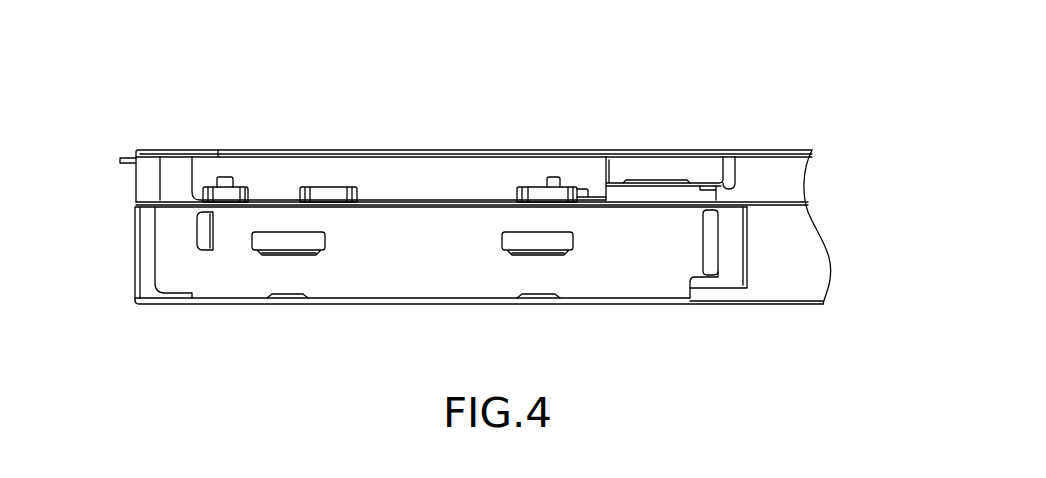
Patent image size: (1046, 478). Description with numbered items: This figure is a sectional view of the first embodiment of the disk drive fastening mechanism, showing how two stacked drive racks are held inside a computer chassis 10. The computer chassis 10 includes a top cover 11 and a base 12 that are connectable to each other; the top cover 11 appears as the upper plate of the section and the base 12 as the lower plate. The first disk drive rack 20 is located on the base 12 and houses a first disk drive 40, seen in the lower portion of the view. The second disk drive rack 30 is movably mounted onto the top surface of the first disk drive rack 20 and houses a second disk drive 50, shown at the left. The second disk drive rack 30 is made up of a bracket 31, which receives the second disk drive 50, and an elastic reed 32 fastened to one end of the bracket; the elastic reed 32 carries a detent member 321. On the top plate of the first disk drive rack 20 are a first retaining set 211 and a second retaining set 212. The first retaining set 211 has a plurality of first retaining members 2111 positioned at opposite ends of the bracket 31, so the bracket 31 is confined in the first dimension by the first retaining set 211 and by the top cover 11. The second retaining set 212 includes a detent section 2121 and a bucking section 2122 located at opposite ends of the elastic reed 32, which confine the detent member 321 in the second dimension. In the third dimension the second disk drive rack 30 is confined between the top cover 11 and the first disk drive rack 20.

The computer chassis 10 is at (526, 228).
The top cover 11 is at (794, 146).
The base 12 is at (497, 333).
The first disk drive rack 20 is at (416, 281).
The second disk drive rack 30 is at (406, 200).
The bracket 31 is at (410, 181).
The elastic reed 32 is at (655, 188).
The detent member 321 is at (707, 189).
The first disk drive 40 is at (139, 263).
The second disk drive 50 is at (131, 177).
The first retaining set 211 is at (280, 155).
The first retaining member 2111 is at (304, 187).
The second retaining set 212 is at (631, 200).
The detent section 2121 is at (721, 145).
The bucking section 2122 is at (580, 189).